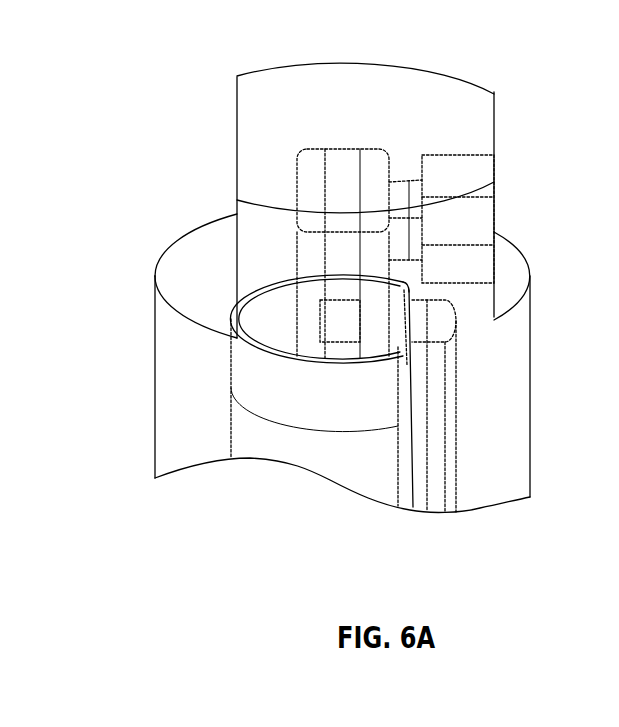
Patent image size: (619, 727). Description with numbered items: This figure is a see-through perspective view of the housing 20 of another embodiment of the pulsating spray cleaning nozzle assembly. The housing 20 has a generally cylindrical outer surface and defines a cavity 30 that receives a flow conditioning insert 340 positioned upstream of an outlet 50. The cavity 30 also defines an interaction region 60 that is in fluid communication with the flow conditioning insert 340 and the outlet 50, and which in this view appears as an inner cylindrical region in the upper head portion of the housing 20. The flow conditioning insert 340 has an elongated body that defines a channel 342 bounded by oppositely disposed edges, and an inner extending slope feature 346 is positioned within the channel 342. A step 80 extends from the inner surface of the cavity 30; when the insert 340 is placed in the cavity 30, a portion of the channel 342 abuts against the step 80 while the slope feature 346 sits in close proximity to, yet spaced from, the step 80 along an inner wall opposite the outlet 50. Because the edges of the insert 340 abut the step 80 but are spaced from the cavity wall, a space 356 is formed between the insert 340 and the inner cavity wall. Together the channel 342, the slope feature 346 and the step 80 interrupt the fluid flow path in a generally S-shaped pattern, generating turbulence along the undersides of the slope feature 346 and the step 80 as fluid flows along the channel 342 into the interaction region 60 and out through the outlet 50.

The housing 20 is at (503, 463).
The cavity 30 is at (403, 505).
The outlet 50 is at (470, 212).
The interaction region 60 is at (326, 190).
The step 80 is at (422, 283).
The flow conditioning insert 340 is at (247, 373).
The channel 342 is at (400, 384).
The inner extending slope feature 346 is at (320, 300).
The space 356 is at (445, 437).